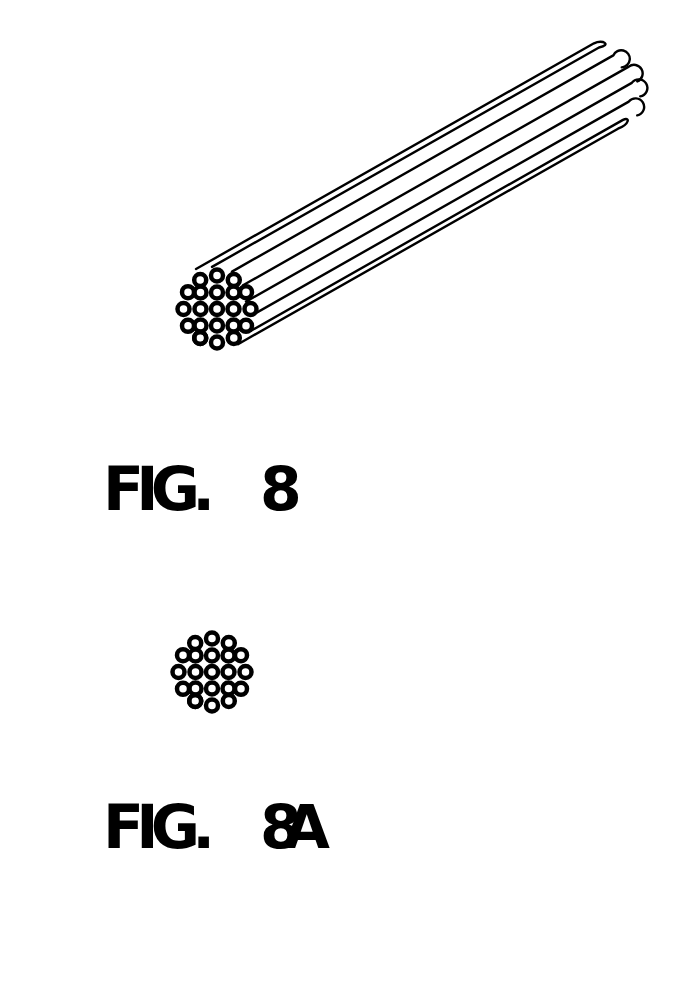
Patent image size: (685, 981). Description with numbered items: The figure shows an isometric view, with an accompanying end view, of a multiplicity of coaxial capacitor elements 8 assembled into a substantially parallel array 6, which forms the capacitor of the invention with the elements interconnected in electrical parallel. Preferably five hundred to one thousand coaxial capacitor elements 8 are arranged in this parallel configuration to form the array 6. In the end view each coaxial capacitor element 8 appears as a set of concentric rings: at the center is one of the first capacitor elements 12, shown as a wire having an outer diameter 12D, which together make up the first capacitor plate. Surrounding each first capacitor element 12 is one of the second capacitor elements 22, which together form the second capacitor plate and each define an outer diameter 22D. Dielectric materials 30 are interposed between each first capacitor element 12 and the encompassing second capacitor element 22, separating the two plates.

In FIG. 8, the array 6 is at (285, 232).
In FIG. 8A, the array 6 is at (207, 637).
In FIG. 8, the coaxial capacitor elements 8 is at (182, 292).
In FIG. 8A, the coaxial capacitor elements 8 is at (173, 656).
In FIG. 8, the first capacitor elements 12 is at (176, 316).
In FIG. 8A, the first capacitor elements 12 is at (173, 677).
In FIG. 8, the outer diameter of first capacitor element 12D is at (176, 335).
In FIG. 8A, the outer diameter of first capacitor element 12D is at (173, 683).
In FIG. 8, the dielectric materials 30 is at (195, 347).
In FIG. 8A, the dielectric materials 30 is at (192, 712).
In FIG. 8, the second capacitor elements 22 is at (253, 333).
In FIG. 8A, the second capacitor elements 22 is at (250, 688).
In FIG. 8, the outer diameter of second capacitor element 22D is at (235, 347).
In FIG. 8A, the outer diameter of second capacitor element 22D is at (233, 712).